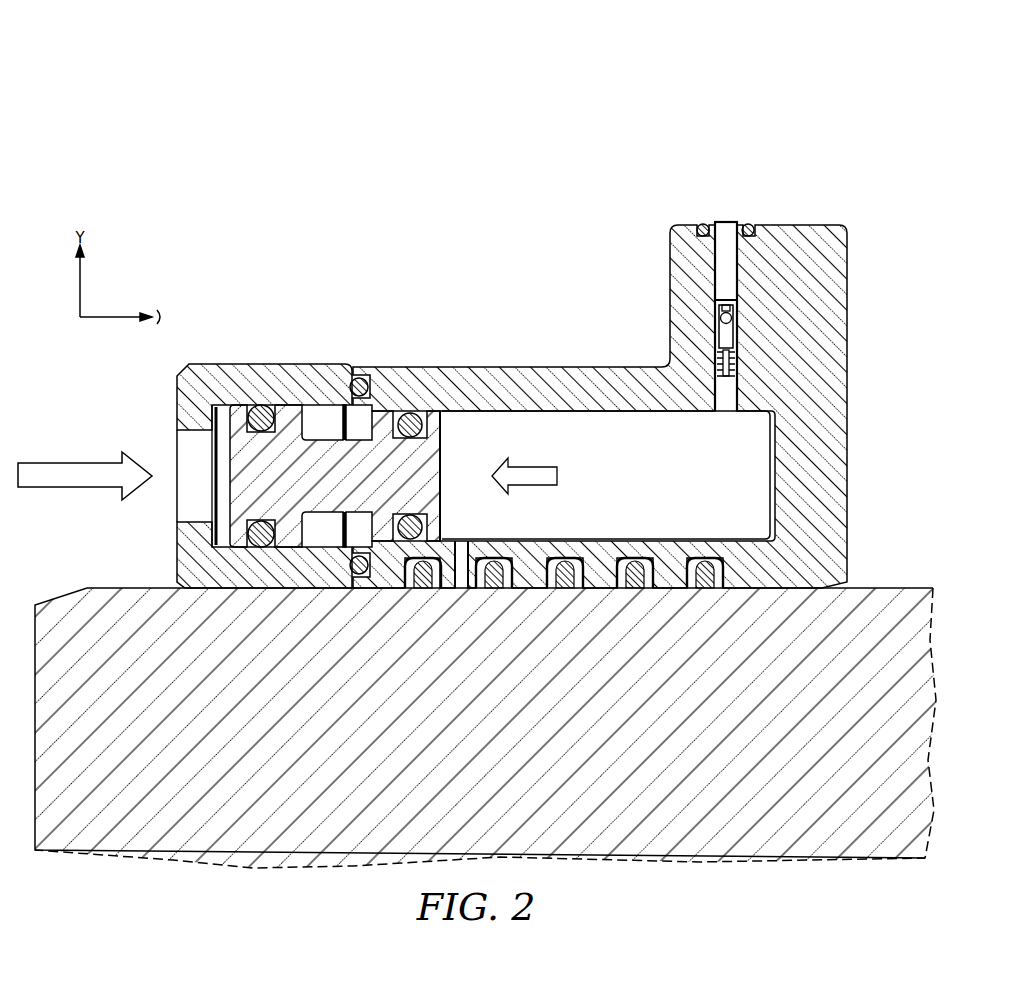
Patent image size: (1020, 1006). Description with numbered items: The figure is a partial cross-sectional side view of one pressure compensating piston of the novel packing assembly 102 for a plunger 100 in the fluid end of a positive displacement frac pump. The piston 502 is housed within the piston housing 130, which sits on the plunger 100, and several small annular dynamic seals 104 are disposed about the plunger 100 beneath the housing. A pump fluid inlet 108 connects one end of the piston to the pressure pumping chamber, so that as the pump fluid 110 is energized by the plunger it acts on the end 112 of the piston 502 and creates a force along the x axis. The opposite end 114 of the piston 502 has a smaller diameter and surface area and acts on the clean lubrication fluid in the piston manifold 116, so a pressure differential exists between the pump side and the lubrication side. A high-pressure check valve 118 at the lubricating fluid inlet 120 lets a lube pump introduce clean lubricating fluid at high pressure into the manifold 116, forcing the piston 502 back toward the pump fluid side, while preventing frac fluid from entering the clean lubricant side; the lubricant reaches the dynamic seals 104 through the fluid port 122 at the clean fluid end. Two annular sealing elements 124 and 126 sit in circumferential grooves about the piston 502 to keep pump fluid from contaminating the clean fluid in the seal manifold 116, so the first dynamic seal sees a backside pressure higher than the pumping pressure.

The plunger 100 is at (485, 728).
The packing assembly 102 is at (180, 100).
The dynamic seals 104 is at (566, 588).
The pump fluid inlet 108 is at (177, 445).
The pump fluid 110 is at (85, 497).
The piston end 112 is at (238, 467).
The piston end 114 is at (442, 455).
The piston manifold 116 is at (606, 475).
The high-pressure check valve 118 is at (717, 305).
The lubricating fluid inlet 120 is at (360, 366).
The fluid port 122 is at (258, 364).
The annular sealing element 124 is at (264, 410).
The annular sealing element 126 is at (411, 411).
The piston housing 130 is at (565, 364).
The piston 502 is at (335, 476).